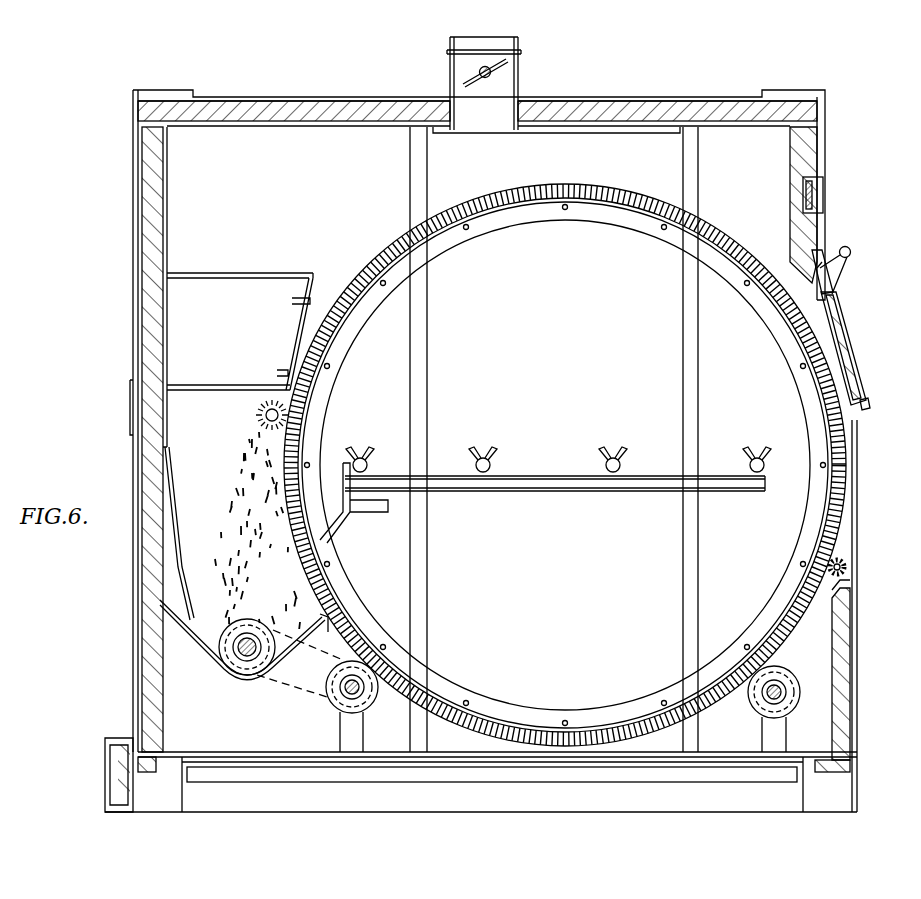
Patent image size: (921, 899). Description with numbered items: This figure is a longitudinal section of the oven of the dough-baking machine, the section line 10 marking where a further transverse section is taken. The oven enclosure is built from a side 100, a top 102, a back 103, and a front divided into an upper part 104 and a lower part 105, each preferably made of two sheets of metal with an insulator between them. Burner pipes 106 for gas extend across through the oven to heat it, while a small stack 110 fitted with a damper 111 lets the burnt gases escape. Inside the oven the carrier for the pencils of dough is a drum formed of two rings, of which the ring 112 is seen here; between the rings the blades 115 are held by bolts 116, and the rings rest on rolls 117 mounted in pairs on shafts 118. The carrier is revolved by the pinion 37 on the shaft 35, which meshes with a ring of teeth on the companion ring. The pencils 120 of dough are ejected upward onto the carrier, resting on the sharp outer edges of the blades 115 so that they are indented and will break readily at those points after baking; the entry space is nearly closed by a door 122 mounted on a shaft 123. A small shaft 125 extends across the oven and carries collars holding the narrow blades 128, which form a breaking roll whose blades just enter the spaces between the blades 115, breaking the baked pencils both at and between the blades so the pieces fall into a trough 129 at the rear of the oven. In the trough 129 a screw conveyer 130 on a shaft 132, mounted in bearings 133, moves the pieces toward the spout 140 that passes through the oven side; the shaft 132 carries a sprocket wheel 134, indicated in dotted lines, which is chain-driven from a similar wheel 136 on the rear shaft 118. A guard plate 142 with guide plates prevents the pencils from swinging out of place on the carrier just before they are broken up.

The section line 10— 10 is at (365, 367).
The shaft 35 is at (846, 562).
The pinion 37 is at (848, 574).
The side 100 is at (324, 188).
The top 102 is at (324, 101).
The back 103 is at (152, 180).
The upper part of the front 104 is at (806, 168).
The lower part of the front 105 is at (848, 703).
The burner pipes 106 is at (492, 468).
The stack 110 is at (502, 80).
The damper 111 is at (462, 82).
The ring 112 is at (787, 596).
The blades 115 is at (825, 548).
The bolts 116 is at (822, 472).
The rolls 117 is at (333, 697).
The shafts 118 is at (362, 695).
The pencils of dough 120 is at (838, 392).
The door 122 is at (851, 365).
The shaft 123 is at (851, 252).
The small shaft 125 is at (262, 423).
The narrow blades 128 is at (262, 410).
The trough 129 is at (212, 655).
The screw conveyer 130 is at (246, 668).
The shaft 132 is at (252, 656).
The bearings 133 is at (306, 650).
The sprocket wheel 134 is at (222, 690).
The wheel 136 is at (336, 724).
The spout 140 is at (312, 308).
The guard plate 142 is at (304, 318).